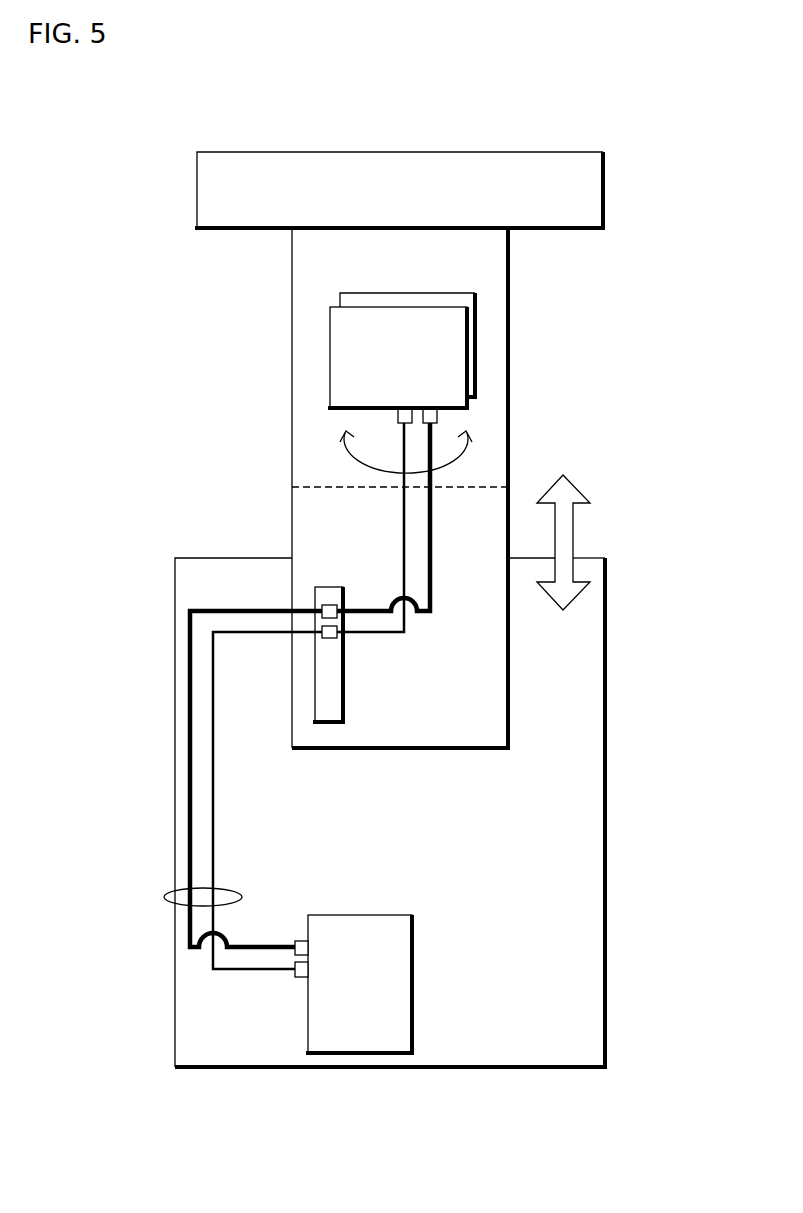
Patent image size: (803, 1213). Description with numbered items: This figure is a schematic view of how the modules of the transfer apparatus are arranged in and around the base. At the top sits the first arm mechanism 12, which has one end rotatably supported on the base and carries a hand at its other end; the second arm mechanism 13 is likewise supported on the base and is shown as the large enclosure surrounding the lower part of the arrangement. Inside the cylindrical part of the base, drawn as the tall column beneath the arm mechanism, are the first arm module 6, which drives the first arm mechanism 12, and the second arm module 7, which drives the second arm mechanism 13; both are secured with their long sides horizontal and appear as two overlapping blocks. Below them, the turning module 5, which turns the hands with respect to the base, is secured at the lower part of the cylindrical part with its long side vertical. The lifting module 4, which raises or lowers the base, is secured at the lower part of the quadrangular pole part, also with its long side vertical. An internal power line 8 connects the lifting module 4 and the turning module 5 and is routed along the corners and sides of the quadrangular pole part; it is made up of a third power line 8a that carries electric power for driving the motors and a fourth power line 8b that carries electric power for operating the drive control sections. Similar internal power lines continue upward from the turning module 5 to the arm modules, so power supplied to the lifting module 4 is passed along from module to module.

The lifting module 4 is at (415, 945).
The turning module 5 is at (346, 702).
The first arm module 6 is at (423, 307).
The second arm module 7 is at (458, 293).
The internal power line 8 is at (244, 895).
The third power line 8a is at (186, 844).
The fourth power line 8b is at (216, 801).
The first arm mechanism 12 is at (606, 189).
The second arm mechanism 13 is at (607, 626).